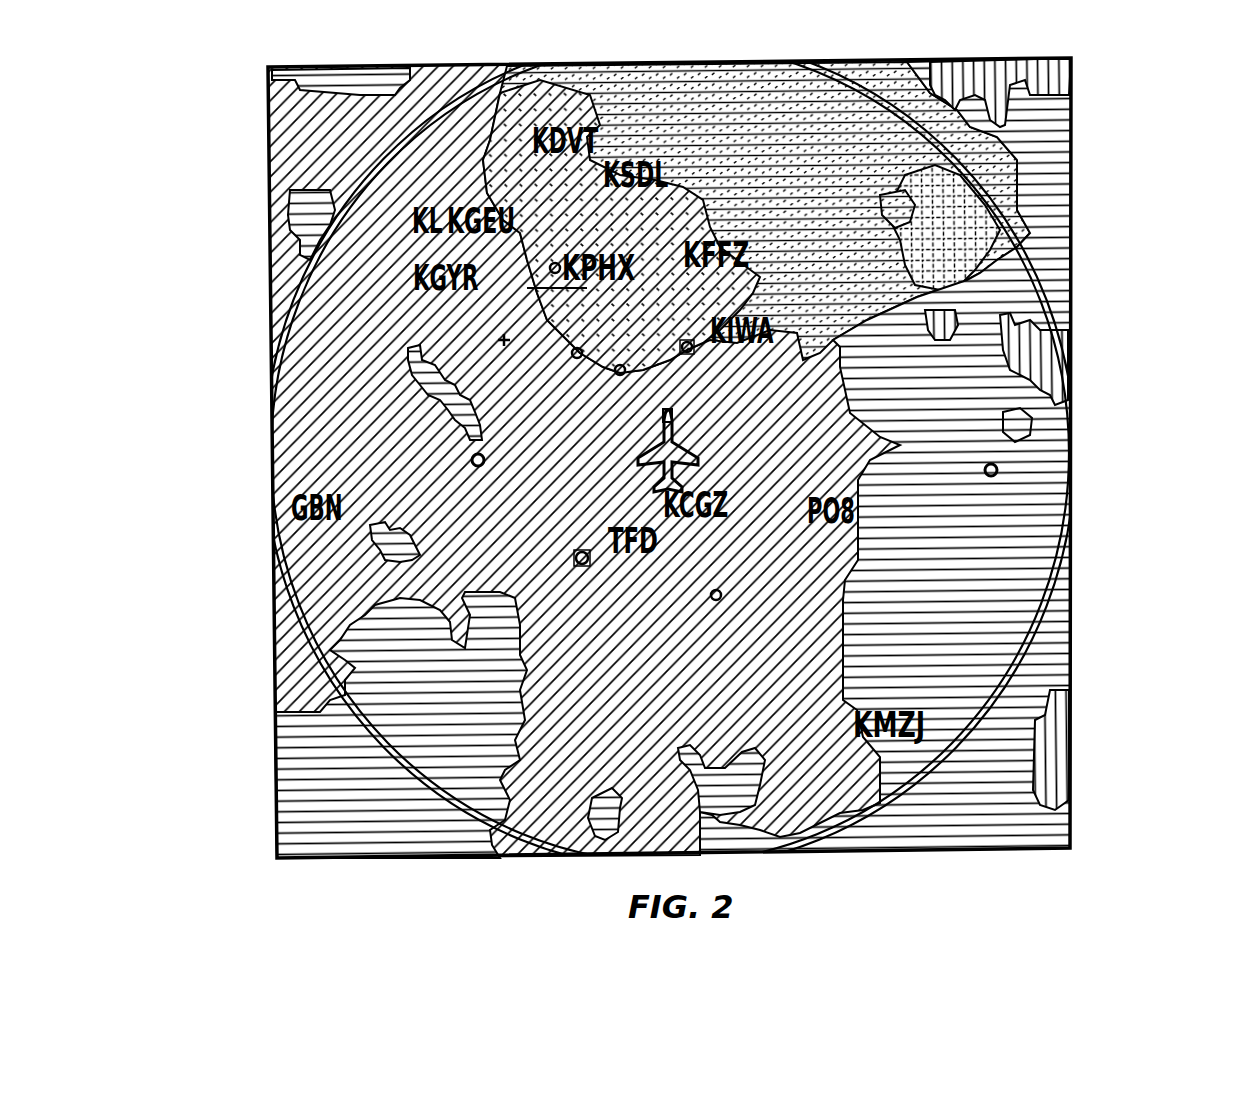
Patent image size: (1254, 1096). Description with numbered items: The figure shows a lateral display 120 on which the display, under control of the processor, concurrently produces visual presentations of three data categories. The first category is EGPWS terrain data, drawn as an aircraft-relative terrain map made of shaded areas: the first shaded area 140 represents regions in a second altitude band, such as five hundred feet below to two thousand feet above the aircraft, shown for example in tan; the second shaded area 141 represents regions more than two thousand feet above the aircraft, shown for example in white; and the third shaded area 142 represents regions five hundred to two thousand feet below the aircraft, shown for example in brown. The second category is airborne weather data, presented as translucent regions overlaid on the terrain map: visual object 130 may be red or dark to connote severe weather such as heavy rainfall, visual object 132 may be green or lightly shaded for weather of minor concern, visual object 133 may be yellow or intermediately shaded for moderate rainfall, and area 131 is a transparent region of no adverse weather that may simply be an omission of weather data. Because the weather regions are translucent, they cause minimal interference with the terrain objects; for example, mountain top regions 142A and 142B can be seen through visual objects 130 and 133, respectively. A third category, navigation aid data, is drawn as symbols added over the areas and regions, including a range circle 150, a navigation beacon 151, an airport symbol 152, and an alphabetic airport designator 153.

The lateral display 120 is at (1065, 610).
The visual object 130 is at (937, 180).
The area 131 is at (477, 668).
The visual object 132 is at (513, 170).
The visual object 133 is at (857, 142).
The visual object 140 is at (1043, 523).
The visual object 141 is at (1017, 427).
The visual object 142 is at (1013, 347).
The mountain top region 142A is at (913, 207).
The mountain top region 142B is at (790, 137).
The range circle 150 is at (1045, 280).
The navigation beacon 151 is at (570, 577).
The airport symbol 152 is at (515, 314).
The alphabetic airport designator 153 is at (930, 770).